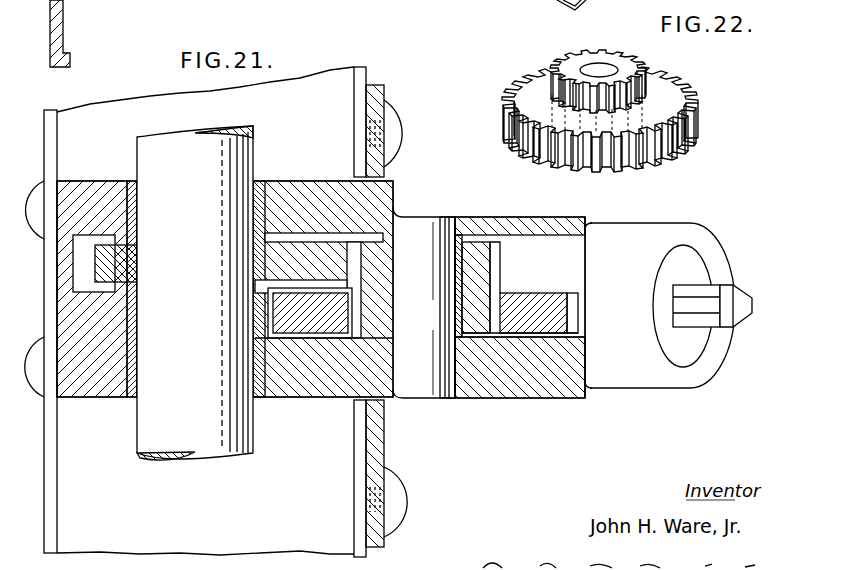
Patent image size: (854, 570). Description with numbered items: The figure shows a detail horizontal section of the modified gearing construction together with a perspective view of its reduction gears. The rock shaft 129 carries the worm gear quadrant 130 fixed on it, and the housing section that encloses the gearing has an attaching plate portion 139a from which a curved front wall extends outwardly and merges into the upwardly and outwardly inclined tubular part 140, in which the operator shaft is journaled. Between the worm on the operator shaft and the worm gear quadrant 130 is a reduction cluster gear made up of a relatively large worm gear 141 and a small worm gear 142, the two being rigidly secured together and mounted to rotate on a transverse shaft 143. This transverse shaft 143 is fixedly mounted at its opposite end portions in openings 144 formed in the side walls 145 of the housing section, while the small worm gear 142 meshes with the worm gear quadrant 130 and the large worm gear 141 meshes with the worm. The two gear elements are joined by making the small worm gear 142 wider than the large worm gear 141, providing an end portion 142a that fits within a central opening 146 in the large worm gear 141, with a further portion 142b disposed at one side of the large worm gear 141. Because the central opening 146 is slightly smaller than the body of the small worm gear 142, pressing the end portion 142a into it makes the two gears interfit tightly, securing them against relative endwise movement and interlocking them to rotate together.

In FIG. 21, the rock shaft 129 is at (207, 430).
In FIG. 21, the worm gear quadrant 130 is at (304, 262).
In FIG. 21, the attaching plate portion 139a is at (378, 447).
In FIG. 21, the tubular part 140 is at (667, 223).
In FIG. 21, the large worm gear 141 is at (550, 327).
In FIG. 22, the large worm gear 141 is at (697, 135).
In FIG. 21, the small worm gear 142 is at (490, 233).
In FIG. 22, the small worm gear 142 is at (550, 55).
In FIG. 21, the end portion 142a is at (475, 322).
In FIG. 21, the portion 142b is at (478, 263).
In FIG. 22, the portion 142b is at (642, 77).
In FIG. 21, the transverse shaft 143 is at (428, 228).
In FIG. 21, the openings 144 is at (462, 220).
In FIG. 21, the side walls 145 is at (568, 215).
In FIG. 21, the central opening 146 is at (497, 313).
In FIG. 22, the central opening 146 is at (625, 110).